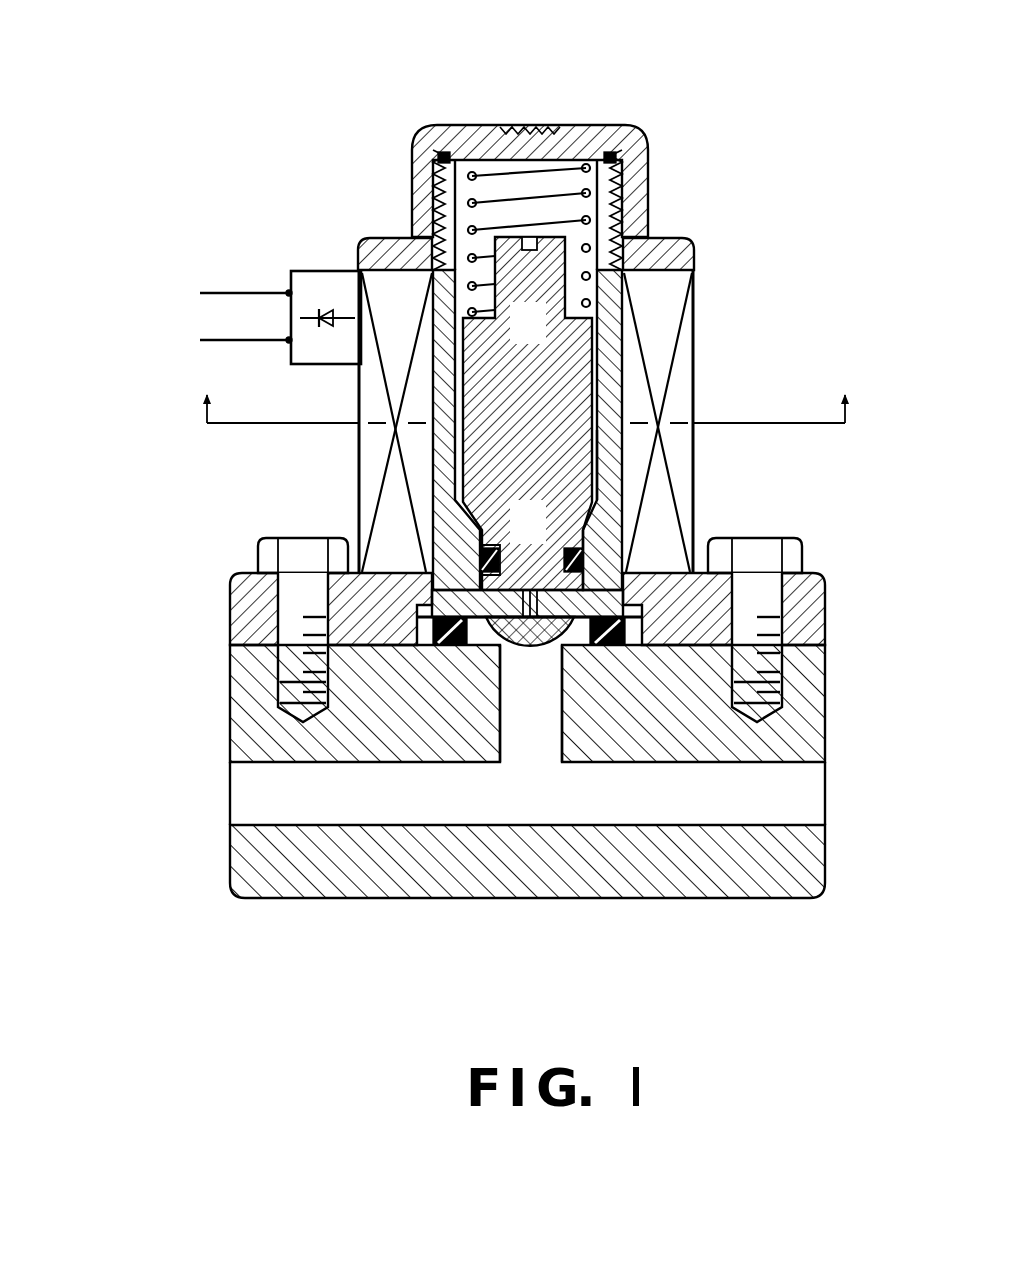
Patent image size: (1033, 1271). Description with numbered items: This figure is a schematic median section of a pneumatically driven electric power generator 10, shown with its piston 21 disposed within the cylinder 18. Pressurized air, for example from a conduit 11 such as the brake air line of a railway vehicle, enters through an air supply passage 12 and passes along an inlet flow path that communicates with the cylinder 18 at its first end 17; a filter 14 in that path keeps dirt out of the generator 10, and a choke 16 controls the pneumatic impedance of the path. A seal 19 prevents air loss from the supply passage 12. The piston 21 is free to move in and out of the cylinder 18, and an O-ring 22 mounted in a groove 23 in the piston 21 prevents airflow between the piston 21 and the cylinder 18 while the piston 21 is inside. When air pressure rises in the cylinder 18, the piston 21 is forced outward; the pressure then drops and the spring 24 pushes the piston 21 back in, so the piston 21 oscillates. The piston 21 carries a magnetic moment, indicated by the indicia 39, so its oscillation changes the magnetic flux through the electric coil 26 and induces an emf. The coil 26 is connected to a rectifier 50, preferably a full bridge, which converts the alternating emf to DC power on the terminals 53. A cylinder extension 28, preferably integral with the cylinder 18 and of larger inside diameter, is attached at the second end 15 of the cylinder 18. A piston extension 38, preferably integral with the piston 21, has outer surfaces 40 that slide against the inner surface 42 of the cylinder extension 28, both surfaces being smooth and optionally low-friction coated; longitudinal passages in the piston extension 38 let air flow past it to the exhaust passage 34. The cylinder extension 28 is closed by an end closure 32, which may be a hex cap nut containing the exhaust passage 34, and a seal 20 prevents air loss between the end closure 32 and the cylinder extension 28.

The pneumatically driven electric power generator 10 is at (305, 118).
The conduit 11 is at (315, 800).
The air supply passage 12 is at (510, 727).
The filter 14 is at (538, 650).
The second end 15 is at (607, 518).
The choke 16 is at (458, 600).
The first end 17 is at (570, 580).
The cylinder 18 is at (640, 605).
The seal 19 is at (437, 630).
The seal 20 is at (580, 170).
The piston 21 is at (480, 540).
The O-ring 22 is at (480, 560).
The groove 23 is at (585, 553).
The spring 24 is at (587, 247).
The electric coil 26 is at (663, 312).
The cylinder extension 28 is at (590, 392).
The end closure 32 is at (410, 238).
The exhaust passage 34 is at (632, 170).
The piston extension 38 is at (486, 384).
The indicia 39 is at (513, 290).
The outer surfaces 40 is at (600, 449).
The inner surface 42 is at (605, 350).
The rectifier 50 is at (300, 262).
The terminals 53 is at (193, 306).